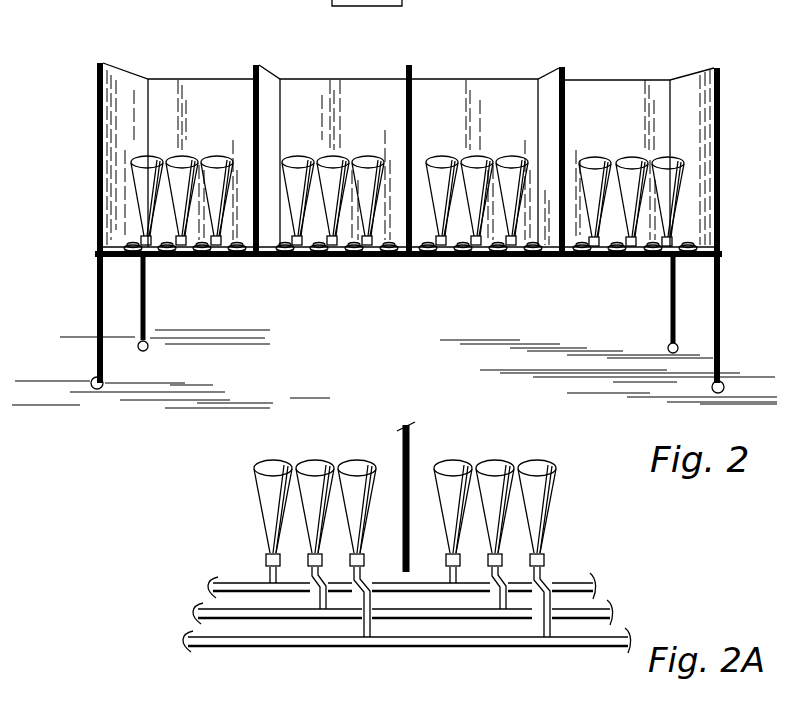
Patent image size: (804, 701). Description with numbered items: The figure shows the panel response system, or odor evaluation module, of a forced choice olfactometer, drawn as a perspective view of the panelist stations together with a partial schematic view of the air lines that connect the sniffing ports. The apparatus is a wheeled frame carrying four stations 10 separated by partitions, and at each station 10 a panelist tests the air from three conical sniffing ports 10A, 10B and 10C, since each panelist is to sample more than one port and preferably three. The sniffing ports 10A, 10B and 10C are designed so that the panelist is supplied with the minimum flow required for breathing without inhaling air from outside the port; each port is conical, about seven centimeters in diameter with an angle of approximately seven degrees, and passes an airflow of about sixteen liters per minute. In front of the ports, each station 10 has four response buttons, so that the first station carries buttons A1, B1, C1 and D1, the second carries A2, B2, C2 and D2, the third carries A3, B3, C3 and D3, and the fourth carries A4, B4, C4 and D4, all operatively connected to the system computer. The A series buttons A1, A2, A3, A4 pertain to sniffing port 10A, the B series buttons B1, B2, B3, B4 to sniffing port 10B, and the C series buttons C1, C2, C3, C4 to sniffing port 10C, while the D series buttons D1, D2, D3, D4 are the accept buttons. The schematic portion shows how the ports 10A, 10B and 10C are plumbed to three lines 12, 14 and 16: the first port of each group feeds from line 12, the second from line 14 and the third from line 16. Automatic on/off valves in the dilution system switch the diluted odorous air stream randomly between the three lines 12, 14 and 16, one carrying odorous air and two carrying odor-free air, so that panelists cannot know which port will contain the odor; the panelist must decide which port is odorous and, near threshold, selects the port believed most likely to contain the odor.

In FIG. 2, the station 10 is at (136, 87).
In FIG. 2A, the station 10 is at (273, 438).
In FIG. 2, the sniffing port 10A is at (143, 152).
In FIG. 2A, the sniffing port 10A is at (273, 465).
In FIG. 2, the sniffing port 10B is at (183, 151).
In FIG. 2A, the sniffing port 10B is at (315, 463).
In FIG. 2, the sniffing port 10C is at (218, 152).
In FIG. 2A, the sniffing port 10C is at (358, 463).
In FIG. 2, the response button A1 is at (127, 257).
In FIG. 2, the response button B1 is at (163, 257).
In FIG. 2, the response button C1 is at (215, 257).
In FIG. 2, the accept button D1 is at (243, 257).
In FIG. 2, the response button A2 is at (299, 257).
In FIG. 2, the response button B2 is at (322, 257).
In FIG. 2, the response button C2 is at (355, 257).
In FIG. 2, the accept button D2 is at (390, 257).
In FIG. 2, the response button A3 is at (447, 258).
In FIG. 2, the response button B3 is at (465, 258).
In FIG. 2, the response button C3 is at (502, 258).
In FIG. 2, the accept button D3 is at (535, 258).
In FIG. 2, the response button A4 is at (607, 258).
In FIG. 2, the response button B4 is at (623, 258).
In FIG. 2, the response button C4 is at (657, 258).
In FIG. 2, the accept button D4 is at (683, 258).
In FIG. 2A, the line 12 is at (240, 582).
In FIG. 2A, the line 14 is at (217, 608).
In FIG. 2A, the line 16 is at (200, 635).